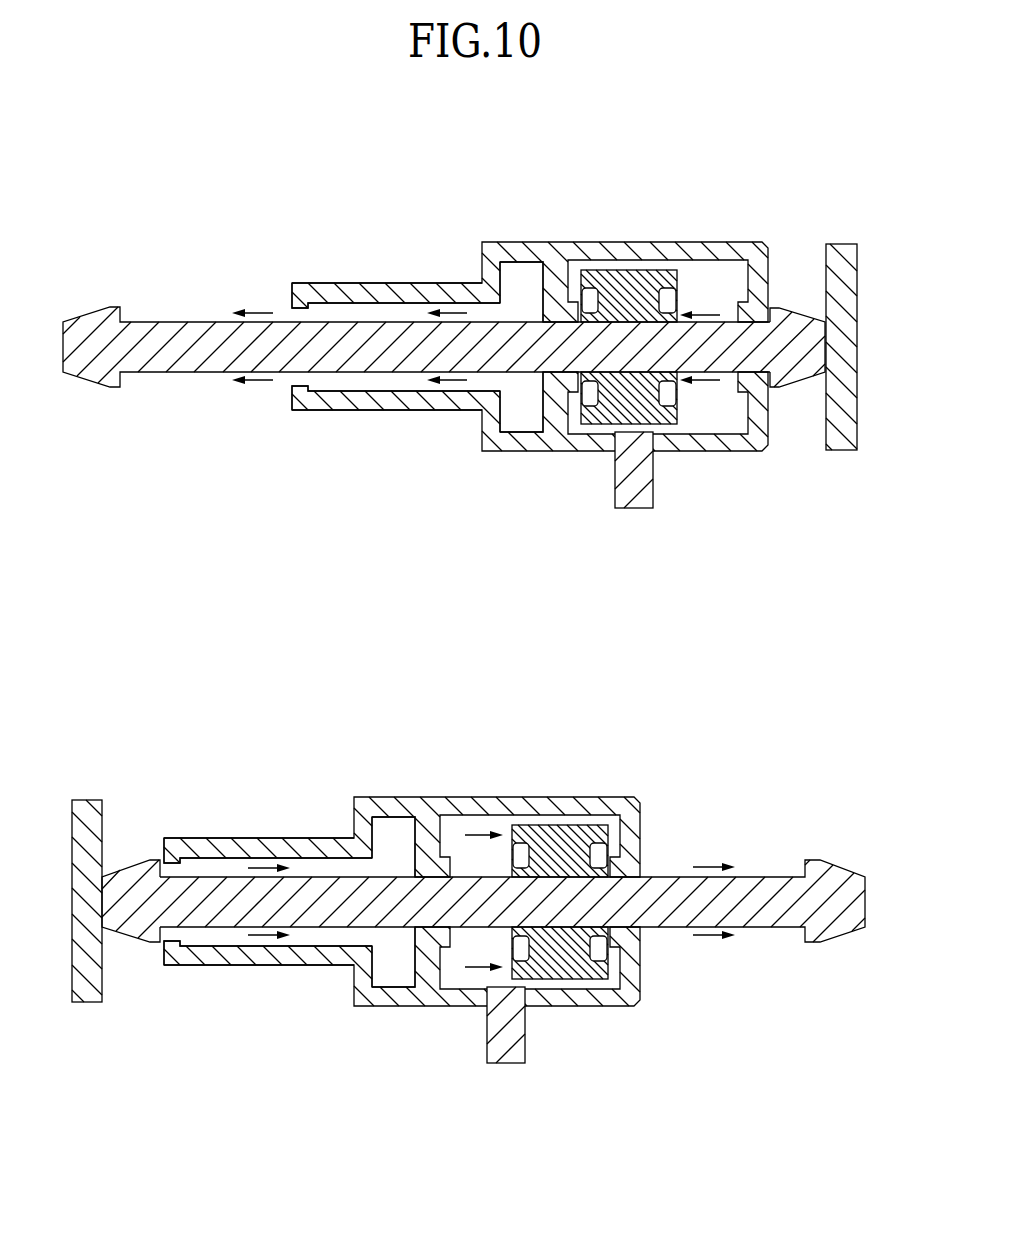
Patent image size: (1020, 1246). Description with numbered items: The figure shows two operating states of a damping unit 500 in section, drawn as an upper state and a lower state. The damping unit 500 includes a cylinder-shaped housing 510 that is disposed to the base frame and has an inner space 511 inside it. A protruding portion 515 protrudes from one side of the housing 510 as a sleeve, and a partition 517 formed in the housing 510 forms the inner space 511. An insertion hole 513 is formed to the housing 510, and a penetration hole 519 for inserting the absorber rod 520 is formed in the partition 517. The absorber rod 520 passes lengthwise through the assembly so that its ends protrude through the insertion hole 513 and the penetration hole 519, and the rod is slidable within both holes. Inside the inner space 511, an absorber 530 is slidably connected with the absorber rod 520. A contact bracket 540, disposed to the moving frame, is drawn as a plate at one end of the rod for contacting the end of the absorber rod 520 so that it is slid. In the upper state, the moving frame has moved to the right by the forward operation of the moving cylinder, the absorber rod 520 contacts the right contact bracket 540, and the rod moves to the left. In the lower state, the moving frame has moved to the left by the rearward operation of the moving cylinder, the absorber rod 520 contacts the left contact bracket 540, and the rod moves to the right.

The damping unit 500 is at (594, 216).
The housing 510 is at (679, 249).
The inner space 511 is at (696, 272).
The insertion hole 513 is at (756, 352).
The protruding portion 515 is at (388, 296).
The partition 517 is at (550, 407).
The penetration hole 519 is at (558, 350).
The absorber rod 520 is at (175, 338).
The absorber 530 is at (651, 409).
The contact bracket 540 is at (839, 244).